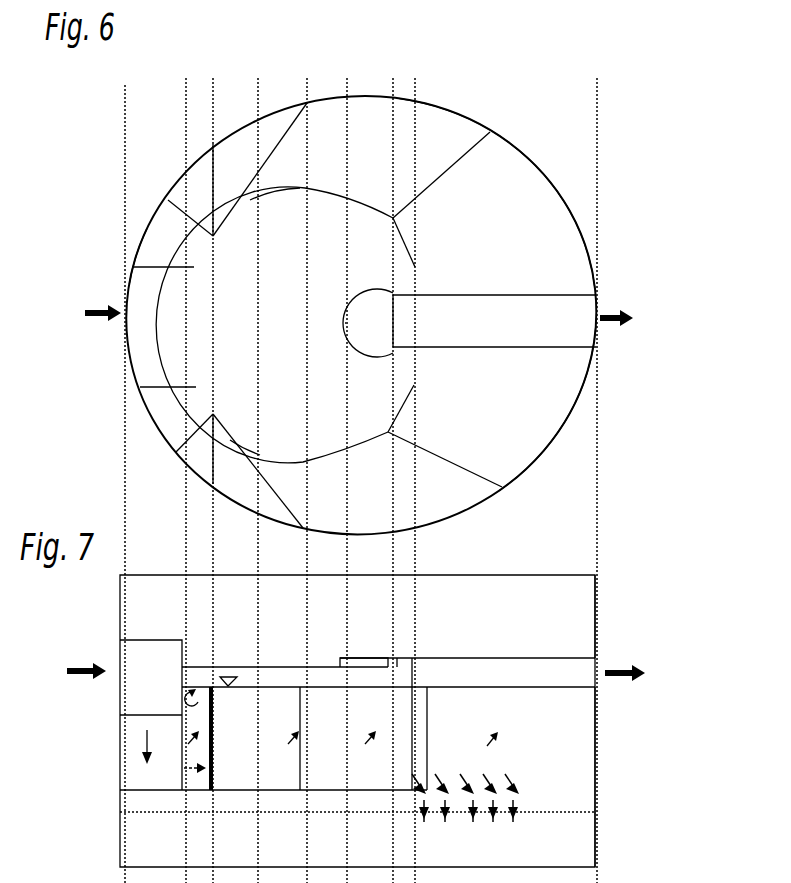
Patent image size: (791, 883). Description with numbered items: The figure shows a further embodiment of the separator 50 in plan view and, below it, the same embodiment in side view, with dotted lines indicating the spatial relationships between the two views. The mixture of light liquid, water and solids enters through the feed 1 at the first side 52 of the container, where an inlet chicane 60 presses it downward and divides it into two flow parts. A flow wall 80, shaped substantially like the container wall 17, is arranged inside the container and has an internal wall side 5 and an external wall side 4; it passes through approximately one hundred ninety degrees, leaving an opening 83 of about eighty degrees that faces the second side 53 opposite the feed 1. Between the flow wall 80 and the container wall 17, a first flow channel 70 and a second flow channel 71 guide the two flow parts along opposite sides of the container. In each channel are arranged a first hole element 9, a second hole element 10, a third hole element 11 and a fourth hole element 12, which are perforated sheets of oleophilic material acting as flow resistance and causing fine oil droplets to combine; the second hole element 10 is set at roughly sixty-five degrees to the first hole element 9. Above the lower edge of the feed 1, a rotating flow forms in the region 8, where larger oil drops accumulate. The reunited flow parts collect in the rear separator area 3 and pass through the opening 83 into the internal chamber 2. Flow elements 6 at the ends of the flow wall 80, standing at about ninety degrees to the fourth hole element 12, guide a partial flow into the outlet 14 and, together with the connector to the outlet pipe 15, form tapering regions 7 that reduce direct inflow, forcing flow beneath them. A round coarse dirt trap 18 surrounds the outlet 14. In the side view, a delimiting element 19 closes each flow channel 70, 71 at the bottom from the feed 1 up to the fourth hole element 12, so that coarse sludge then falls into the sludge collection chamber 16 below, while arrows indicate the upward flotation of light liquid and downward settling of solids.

In FIG. 6, the feed 1 is at (126, 281).
In FIG. 7, the feed 1 is at (120, 652).
In FIG. 6, the internal chamber 2 is at (287, 309).
In FIG. 6, the rear separator area 3 is at (550, 284).
In FIG. 7, the rear separator area 3 is at (565, 748).
In FIG. 6, the external wall side 4 is at (312, 188).
In FIG. 6, the internal wall side 5 is at (276, 196).
In FIG. 6, the flow element 6 is at (407, 242).
In FIG. 7, the flow element 6 is at (413, 703).
In FIG. 6, the tapering region 7 is at (412, 288).
In FIG. 6, the region 8 is at (177, 250).
In FIG. 7, the region 8 is at (182, 692).
In FIG. 6, the first hole element 9 is at (172, 203).
In FIG. 6, the second hole element 10 is at (216, 144).
In FIG. 7, the second hole element 10 is at (214, 777).
In FIG. 6, the third hole element 11 is at (278, 111).
In FIG. 7, the third hole element 11 is at (302, 770).
In FIG. 6, the fourth hole element 12 is at (462, 165).
In FIG. 7, the fourth hole element 12 is at (388, 760).
In FIG. 6, the outlet 14 is at (392, 337).
In FIG. 7, the outlet 14 is at (458, 658).
In FIG. 6, the outlet pipe 15 is at (598, 338).
In FIG. 7, the outlet pipe 15 is at (348, 658).
In FIG. 7, the sludge collection chamber 16 is at (505, 860).
In FIG. 6, the container wall 17 is at (522, 152).
In FIG. 7, the container wall 17 is at (597, 598).
In FIG. 6, the coarse dirt trap 18 is at (345, 325).
In FIG. 7, the delimiting element 19 is at (145, 792).
In FIG. 6, the separator 50 is at (554, 63).
In FIG. 7, the separator 50 is at (611, 541).
In FIG. 6, the first side 52 is at (130, 240).
In FIG. 7, the first side 52 is at (114, 764).
In FIG. 6, the second side 53 is at (586, 222).
In FIG. 7, the second side 53 is at (597, 730).
In FIG. 7, the inlet chicane 60 is at (120, 727).
In FIG. 6, the first flow channel 70 is at (388, 155).
In FIG. 7, the first flow channel 70 is at (332, 754).
In FIG. 6, the second flow channel 71 is at (378, 509).
In FIG. 6, the flow wall 80 is at (204, 260).
In FIG. 7, the flow wall 80 is at (427, 740).
In FIG. 6, the opening 83 is at (436, 362).